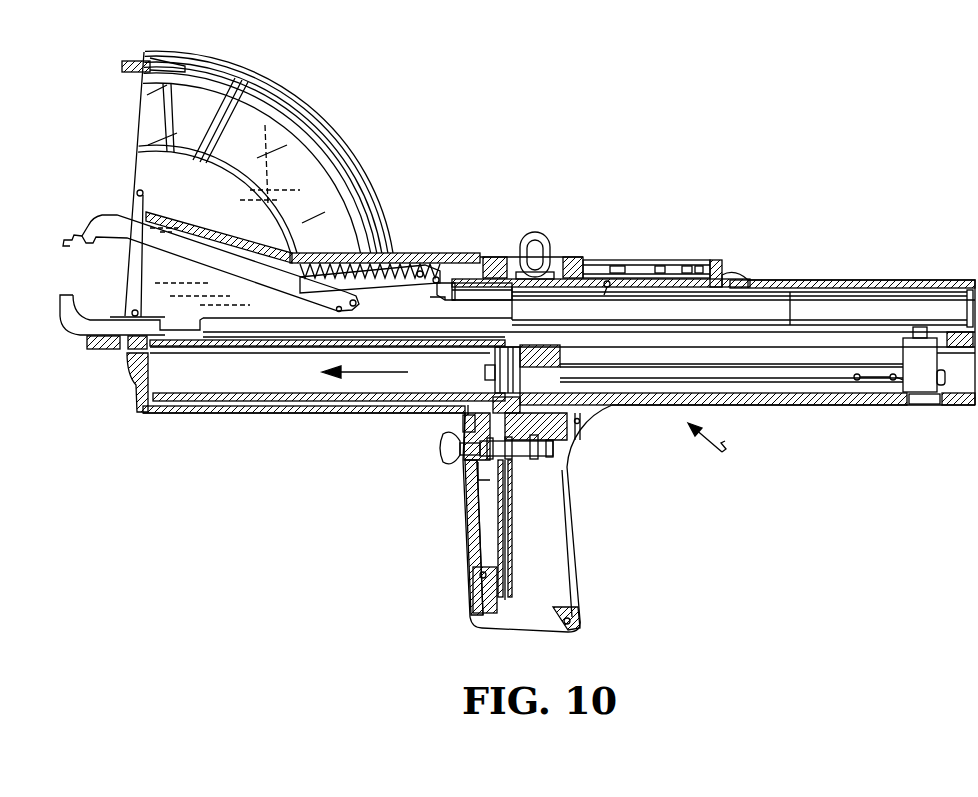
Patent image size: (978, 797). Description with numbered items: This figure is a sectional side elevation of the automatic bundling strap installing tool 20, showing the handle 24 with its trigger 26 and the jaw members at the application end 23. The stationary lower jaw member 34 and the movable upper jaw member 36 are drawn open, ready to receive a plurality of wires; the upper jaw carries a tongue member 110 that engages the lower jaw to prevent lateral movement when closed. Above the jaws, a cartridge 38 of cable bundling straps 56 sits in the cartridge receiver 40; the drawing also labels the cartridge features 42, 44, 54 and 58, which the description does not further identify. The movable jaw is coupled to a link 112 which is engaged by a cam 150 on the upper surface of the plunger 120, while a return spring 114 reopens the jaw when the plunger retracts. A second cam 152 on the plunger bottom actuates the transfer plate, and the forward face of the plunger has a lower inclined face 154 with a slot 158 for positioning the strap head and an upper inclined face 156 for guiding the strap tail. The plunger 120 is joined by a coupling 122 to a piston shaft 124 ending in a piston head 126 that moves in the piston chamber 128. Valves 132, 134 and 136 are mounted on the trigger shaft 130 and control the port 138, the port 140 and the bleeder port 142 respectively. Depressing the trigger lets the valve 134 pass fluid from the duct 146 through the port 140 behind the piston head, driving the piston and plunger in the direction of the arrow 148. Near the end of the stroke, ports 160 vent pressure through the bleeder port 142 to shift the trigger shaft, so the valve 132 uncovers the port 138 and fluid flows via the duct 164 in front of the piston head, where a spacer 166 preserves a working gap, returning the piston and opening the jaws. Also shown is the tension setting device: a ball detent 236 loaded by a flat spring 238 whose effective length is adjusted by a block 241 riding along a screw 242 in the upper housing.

The automatic bundling strap installing tool 20 is at (559, 368).
The application end 23 is at (205, 413).
The handle 24 is at (576, 540).
The trigger 26 is at (438, 458).
The lower jaw member 34 is at (71, 325).
The upper jaw member 36 is at (110, 213).
The cartridge 38 is at (361, 198).
The cartridge receiver 40 is at (222, 214).
The stop 42 is at (135, 58).
The ring 44 is at (536, 232).
The rim 54 is at (381, 198).
The cable bundling strap 56 is at (253, 100).
The arc 58 is at (284, 240).
The tongue member 110 is at (72, 238).
The link 112 is at (406, 268).
The return spring 114 is at (348, 253).
The plunger 120 is at (754, 306).
The coupling 122 is at (941, 405).
The piston shaft 124 is at (872, 390).
The piston head 126 is at (508, 350).
The piston chamber 128 is at (284, 378).
The trigger shaft 130 is at (490, 478).
The valve 132 is at (477, 478).
The valve 134 is at (520, 470).
The valve 136 is at (566, 452).
The port 138 is at (464, 424).
The port 140 is at (575, 427).
The bleeder port 142 is at (575, 440).
The duct 146 is at (508, 560).
The arrow 148 is at (392, 372).
The cam 150 is at (455, 281).
The cam 152 is at (468, 332).
The lower inclined face 154 is at (436, 331).
The upper inclined face 156 is at (450, 296).
The slot 158 is at (462, 305).
The ports 160 is at (875, 395).
The duct 164 is at (180, 405).
The spacer 166 is at (486, 376).
The ball detent 236 is at (605, 290).
The flat spring 238 is at (612, 260).
The block 241 is at (643, 263).
The screw 242 is at (724, 274).